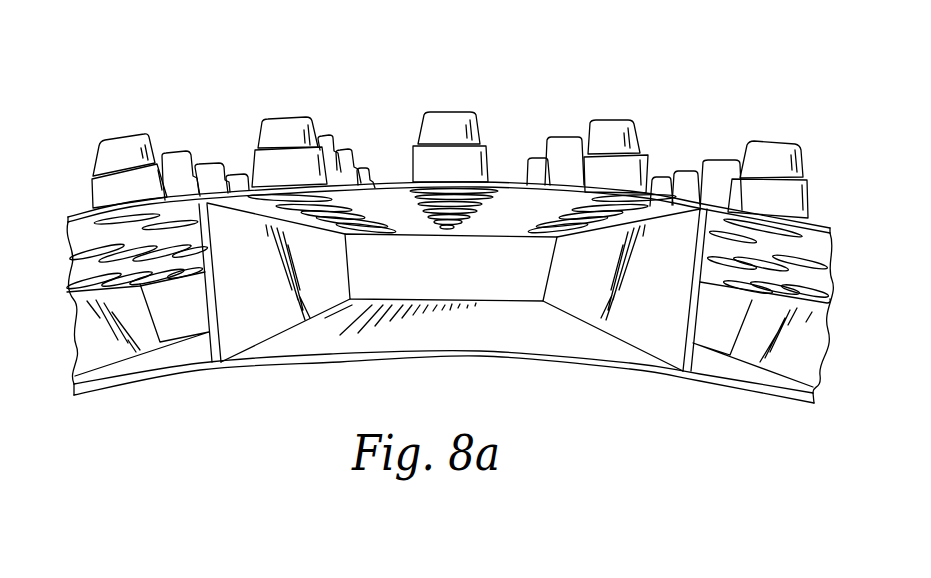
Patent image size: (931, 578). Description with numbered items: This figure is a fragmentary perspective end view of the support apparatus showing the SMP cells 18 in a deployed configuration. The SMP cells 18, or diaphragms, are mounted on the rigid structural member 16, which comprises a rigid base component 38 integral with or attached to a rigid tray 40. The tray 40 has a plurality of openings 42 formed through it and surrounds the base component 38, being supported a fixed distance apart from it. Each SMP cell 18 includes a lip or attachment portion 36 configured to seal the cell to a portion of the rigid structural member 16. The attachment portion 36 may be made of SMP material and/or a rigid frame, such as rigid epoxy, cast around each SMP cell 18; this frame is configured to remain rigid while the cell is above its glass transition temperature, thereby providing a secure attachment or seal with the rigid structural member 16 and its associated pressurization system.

The rigid structural member 16 is at (302, 364).
The SMP cell 18 is at (280, 119).
The attachment portion 36 is at (96, 188).
The base component 38 is at (385, 340).
The tray 40 is at (388, 182).
The openings 42 is at (463, 197).